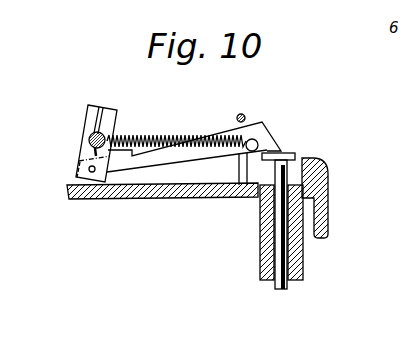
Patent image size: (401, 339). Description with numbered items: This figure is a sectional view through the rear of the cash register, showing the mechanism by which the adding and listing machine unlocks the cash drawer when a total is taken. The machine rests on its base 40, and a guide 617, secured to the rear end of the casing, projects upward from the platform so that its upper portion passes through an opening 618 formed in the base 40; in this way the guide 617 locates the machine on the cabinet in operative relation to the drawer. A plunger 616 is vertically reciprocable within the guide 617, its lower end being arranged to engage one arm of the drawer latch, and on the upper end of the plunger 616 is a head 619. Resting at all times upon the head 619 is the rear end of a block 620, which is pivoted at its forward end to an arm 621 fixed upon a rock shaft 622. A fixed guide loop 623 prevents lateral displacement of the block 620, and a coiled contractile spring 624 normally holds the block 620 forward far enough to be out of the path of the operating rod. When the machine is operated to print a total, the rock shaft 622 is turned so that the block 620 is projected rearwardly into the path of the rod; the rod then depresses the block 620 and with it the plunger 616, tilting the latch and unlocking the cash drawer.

The base 40 is at (330, 192).
The plunger 616 is at (278, 288).
The guide 617 is at (306, 275).
The opening 618 is at (243, 192).
The head 619 is at (290, 155).
The block 620 is at (244, 131).
The arm 621 is at (73, 156).
The rock shaft 622 is at (90, 133).
The fixed guide loop 623 is at (237, 117).
The coiled contractile spring 624 is at (146, 136).